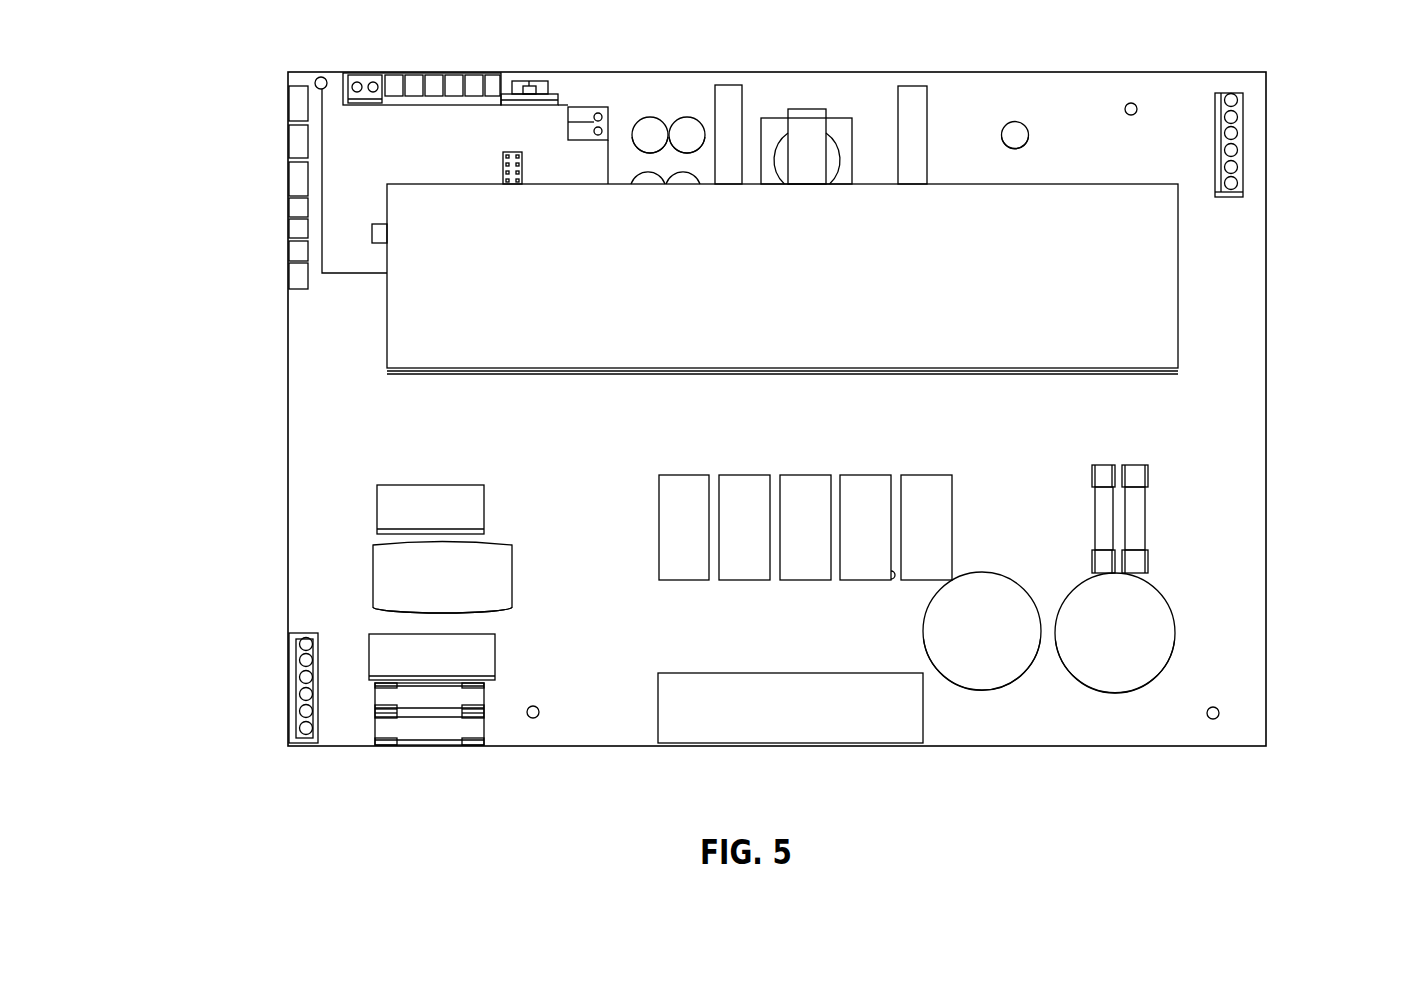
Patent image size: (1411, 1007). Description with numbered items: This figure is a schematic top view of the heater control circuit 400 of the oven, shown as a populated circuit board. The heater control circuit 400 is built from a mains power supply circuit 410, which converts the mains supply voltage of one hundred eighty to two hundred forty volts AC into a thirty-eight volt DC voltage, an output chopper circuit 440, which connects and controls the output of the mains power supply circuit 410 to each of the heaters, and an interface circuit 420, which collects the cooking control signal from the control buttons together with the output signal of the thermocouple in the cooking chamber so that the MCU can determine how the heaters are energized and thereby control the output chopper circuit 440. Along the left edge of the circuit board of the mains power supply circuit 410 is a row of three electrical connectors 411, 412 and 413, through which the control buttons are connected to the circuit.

The heater control circuit 400 is at (220, 688).
The mains power supply circuit 410 is at (1242, 547).
The electrical connector 411 is at (297, 107).
The electrical connector 412 is at (297, 147).
The electrical connector 413 is at (297, 182).
The interface circuit 420 is at (592, 94).
The output chopper circuit 440 is at (1242, 251).